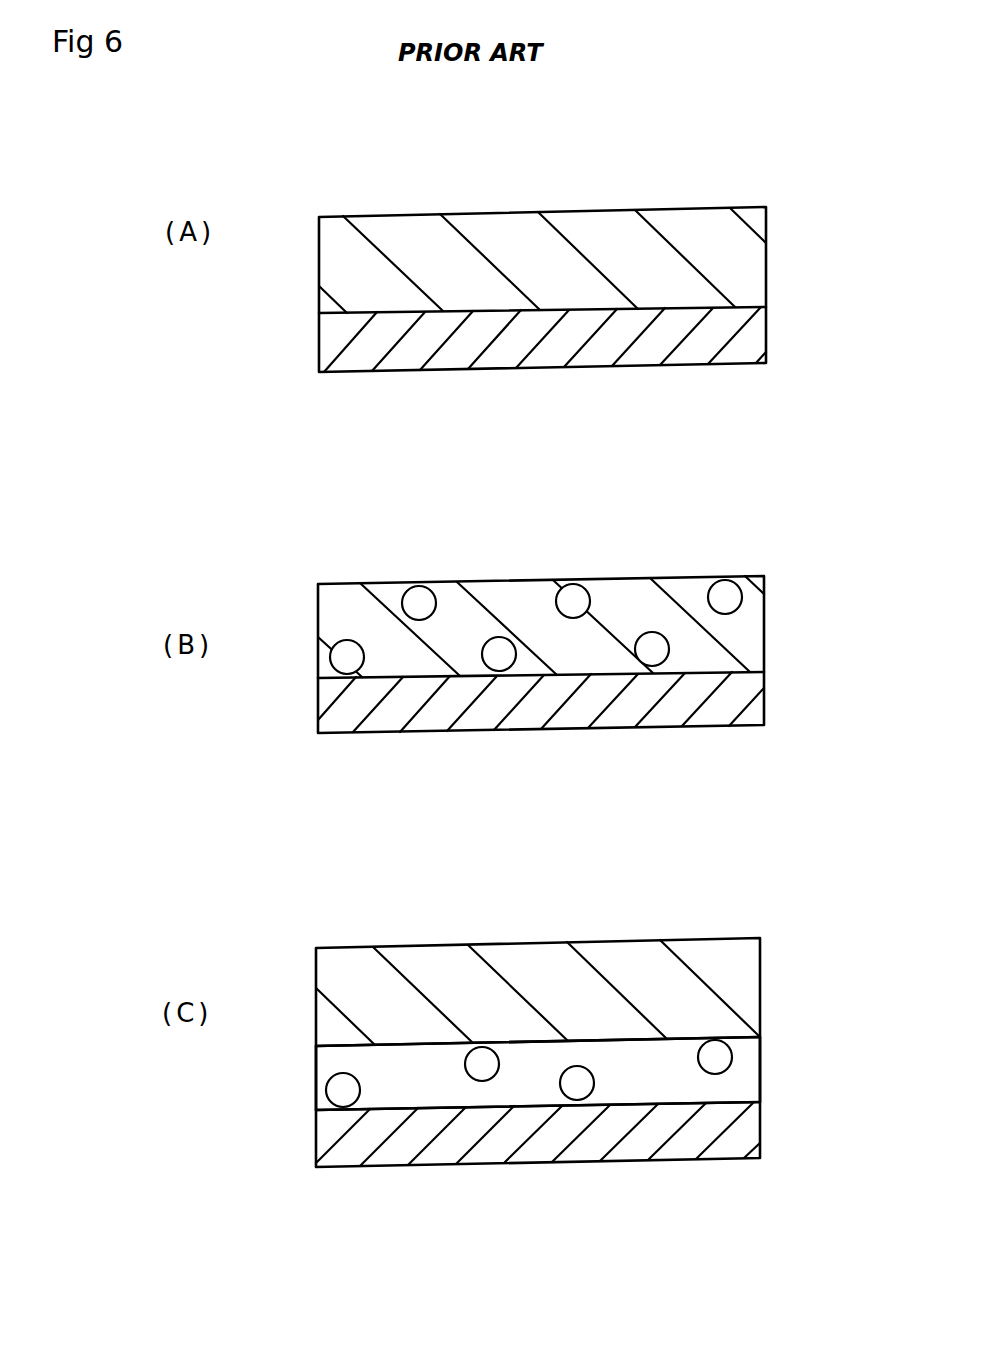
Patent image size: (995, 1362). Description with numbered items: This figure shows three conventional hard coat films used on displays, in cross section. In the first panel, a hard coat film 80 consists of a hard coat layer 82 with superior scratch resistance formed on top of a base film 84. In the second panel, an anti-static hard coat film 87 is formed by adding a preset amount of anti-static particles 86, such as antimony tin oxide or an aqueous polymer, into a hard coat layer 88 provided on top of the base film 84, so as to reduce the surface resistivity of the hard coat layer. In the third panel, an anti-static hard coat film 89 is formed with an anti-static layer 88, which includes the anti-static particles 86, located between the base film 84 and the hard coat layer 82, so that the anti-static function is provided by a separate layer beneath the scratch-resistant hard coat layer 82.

The hard coat film 80 is at (913, 257).
The hard coat layer 82 is at (743, 267).
The base film 84 is at (745, 325).
The anti-static particles 86 is at (747, 596).
The anti-static hard coat film 87 is at (737, 550).
The hard coat layer (anti-static layer) 88 is at (740, 632).
The anti-static hard coat film 89 is at (733, 890).